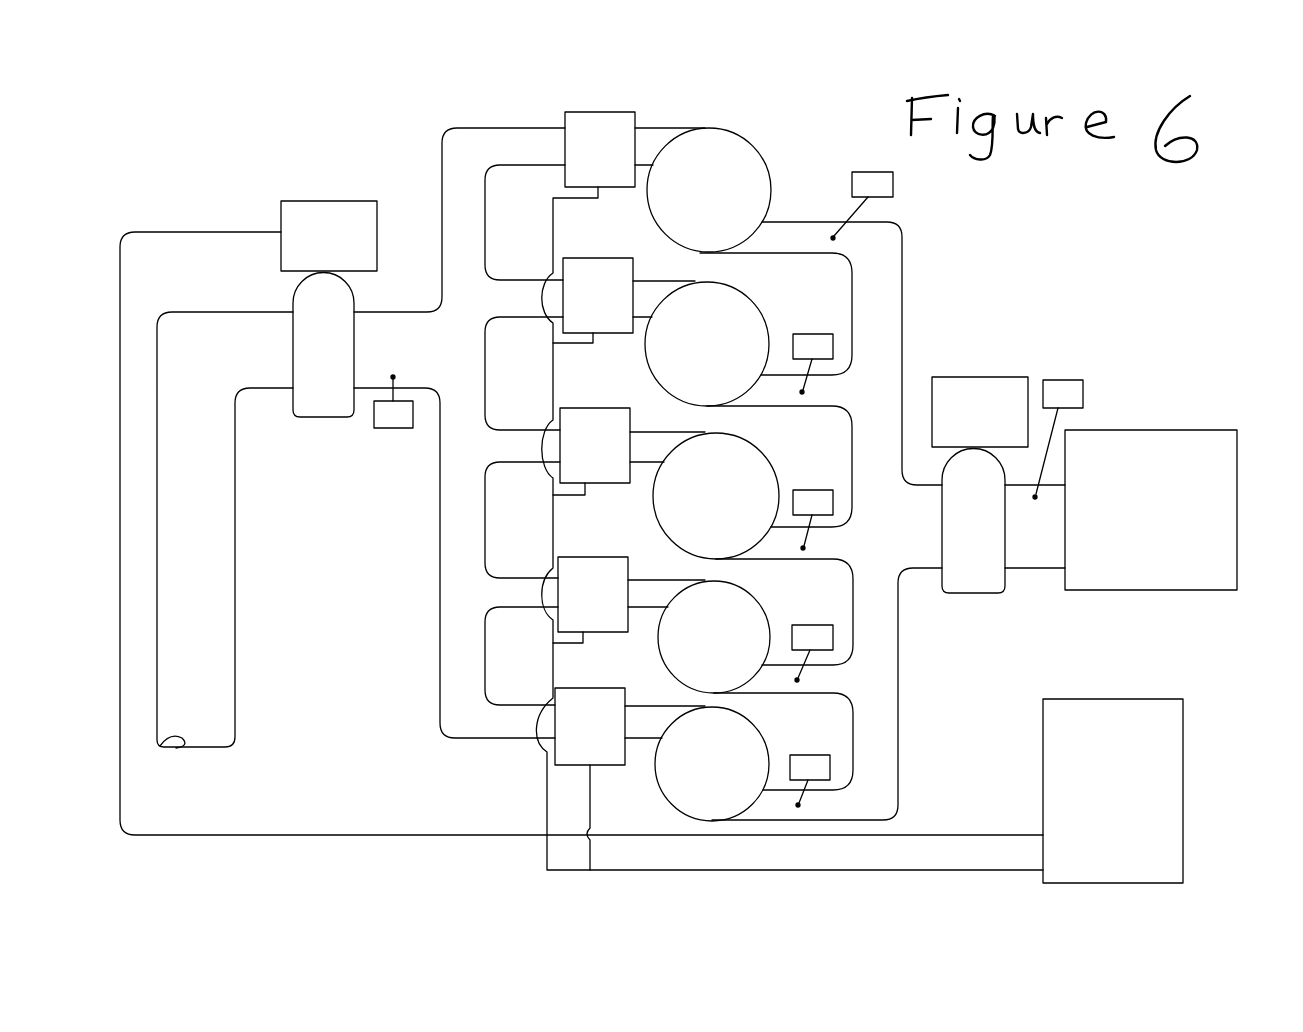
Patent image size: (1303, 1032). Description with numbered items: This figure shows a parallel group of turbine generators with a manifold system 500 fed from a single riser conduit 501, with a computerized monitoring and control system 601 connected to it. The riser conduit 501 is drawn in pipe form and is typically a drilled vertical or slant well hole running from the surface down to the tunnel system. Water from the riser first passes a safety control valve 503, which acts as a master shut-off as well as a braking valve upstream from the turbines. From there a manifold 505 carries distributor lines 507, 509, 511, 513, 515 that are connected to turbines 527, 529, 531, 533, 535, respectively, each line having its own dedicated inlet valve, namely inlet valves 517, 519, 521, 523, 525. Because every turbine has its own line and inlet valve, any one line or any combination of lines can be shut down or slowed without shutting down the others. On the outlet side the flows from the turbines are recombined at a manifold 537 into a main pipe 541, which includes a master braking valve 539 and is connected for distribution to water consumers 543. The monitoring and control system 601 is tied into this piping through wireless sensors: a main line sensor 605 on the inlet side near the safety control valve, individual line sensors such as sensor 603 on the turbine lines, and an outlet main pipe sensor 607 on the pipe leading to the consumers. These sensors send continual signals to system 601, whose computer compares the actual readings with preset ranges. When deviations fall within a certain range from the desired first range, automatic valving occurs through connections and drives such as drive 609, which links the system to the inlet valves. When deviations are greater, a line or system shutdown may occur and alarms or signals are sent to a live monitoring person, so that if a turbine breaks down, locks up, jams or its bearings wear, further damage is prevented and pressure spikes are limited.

The hydroelectric power generation system 500 is at (935, 311).
The riser conduit 501 is at (235, 596).
The safety control valve 503 is at (313, 418).
The manifold 505 is at (437, 480).
The distributor line 507 is at (514, 140).
The distributor line 509 is at (518, 287).
The distributor line 511 is at (520, 444).
The distributor line 513 is at (520, 591).
The connecting pipe 515 is at (518, 712).
The inlet valve 517 is at (622, 108).
The inlet valve 519 is at (583, 257).
The inlet valve 521 is at (570, 407).
The inlet valve 523 is at (570, 560).
The inlet valve 525 is at (568, 688).
The turbine 527 is at (785, 130).
The turbine 529 is at (770, 312).
The turbine 531 is at (752, 446).
The turbine 533 is at (760, 602).
The turbine 535 is at (762, 738).
The manifold 537 is at (878, 686).
The master braking valve 539 is at (977, 577).
The main pipe 541 is at (1035, 552).
The water consumers 543 is at (1121, 430).
The computerized monitoring and control system 601 is at (1185, 720).
The individual line sensor 603 is at (893, 184).
The main line sensor 605 is at (382, 428).
The outlet main pipe sensor 607 is at (1068, 380).
The drive 609 is at (585, 765).